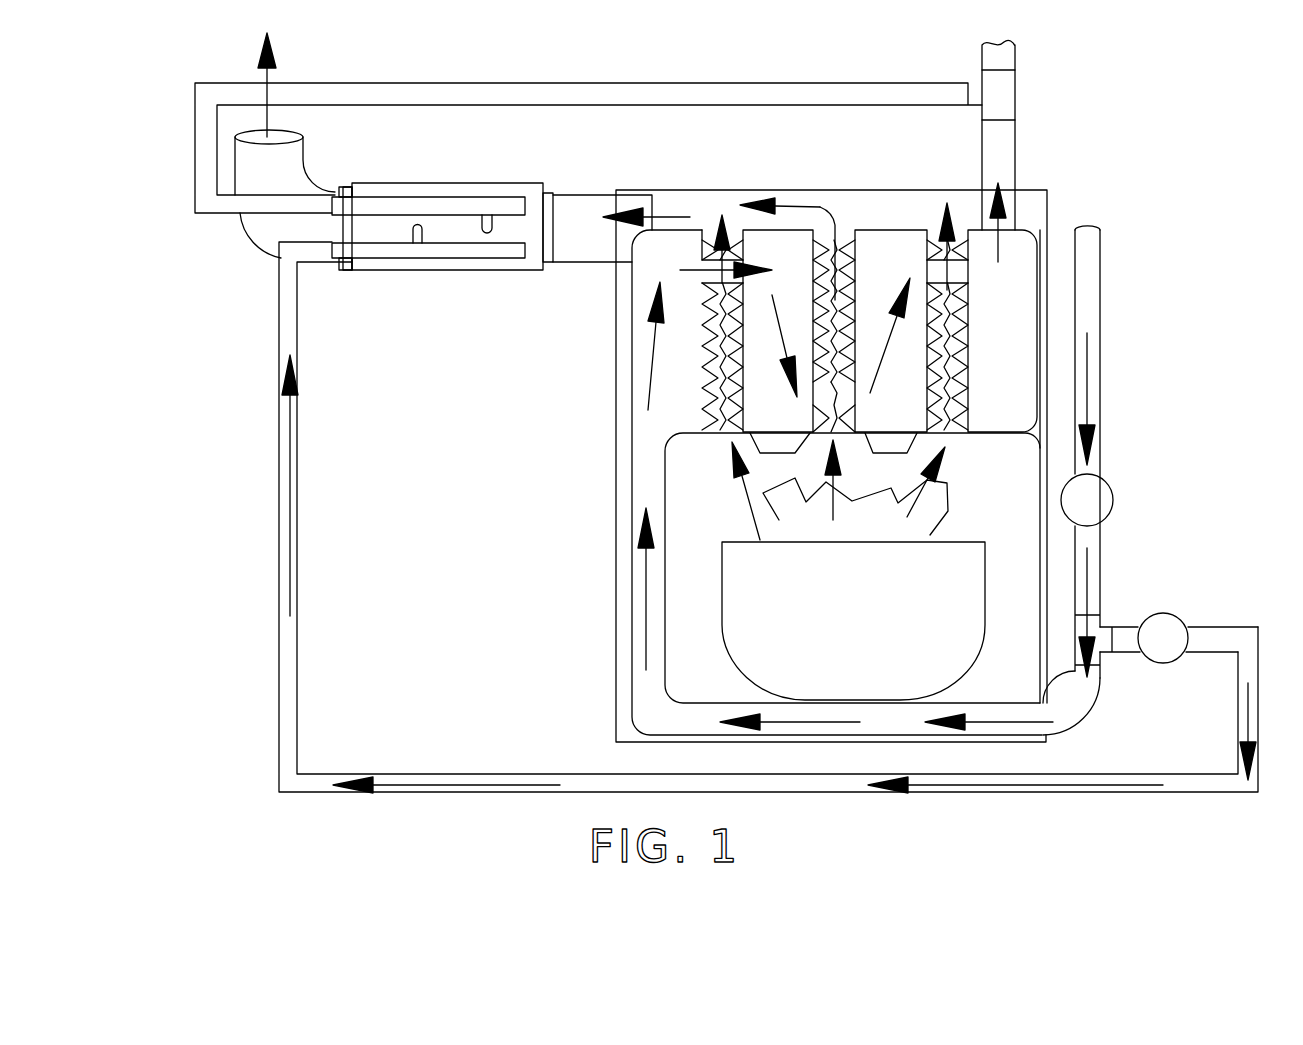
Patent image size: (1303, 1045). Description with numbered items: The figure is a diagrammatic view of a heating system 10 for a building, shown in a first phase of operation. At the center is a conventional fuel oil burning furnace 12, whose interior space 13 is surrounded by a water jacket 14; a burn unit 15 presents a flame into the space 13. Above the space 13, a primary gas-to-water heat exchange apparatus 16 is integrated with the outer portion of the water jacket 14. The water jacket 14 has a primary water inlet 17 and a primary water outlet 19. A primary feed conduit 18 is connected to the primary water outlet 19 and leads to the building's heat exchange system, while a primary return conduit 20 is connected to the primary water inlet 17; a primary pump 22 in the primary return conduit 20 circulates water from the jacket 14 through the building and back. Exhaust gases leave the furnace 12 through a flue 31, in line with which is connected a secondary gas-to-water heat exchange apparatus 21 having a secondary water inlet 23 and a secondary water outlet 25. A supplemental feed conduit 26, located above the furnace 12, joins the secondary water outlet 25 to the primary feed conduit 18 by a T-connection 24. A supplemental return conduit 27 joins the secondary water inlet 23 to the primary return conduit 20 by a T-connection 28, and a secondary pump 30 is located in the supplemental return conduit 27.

The heating system 10 is at (1116, 97).
The furnace 12 is at (594, 486).
The interior space 13 is at (677, 455).
The water jacket 14 is at (609, 689).
The burn unit 15 is at (733, 561).
The primary gas-to-water heat exchange apparatus 16 is at (676, 338).
The primary water inlet 17 is at (1050, 734).
The primary feed conduit 18 is at (986, 48).
The primary water outlet 19 is at (1007, 225).
The primary return conduit 20 is at (1092, 283).
The secondary gas-to-water heat exchange apparatus 21 is at (444, 164).
The primary pump 22 is at (1098, 517).
The secondary water inlet 23 is at (338, 262).
The T-connection 24 is at (1005, 90).
The secondary water outlet 25 is at (337, 192).
The supplemental feed conduit 26 is at (596, 90).
The supplemental return conduit 27 is at (287, 332).
The T-connection 28 is at (1096, 628).
The secondary pump 30 is at (1172, 622).
The flue 31 is at (571, 205).